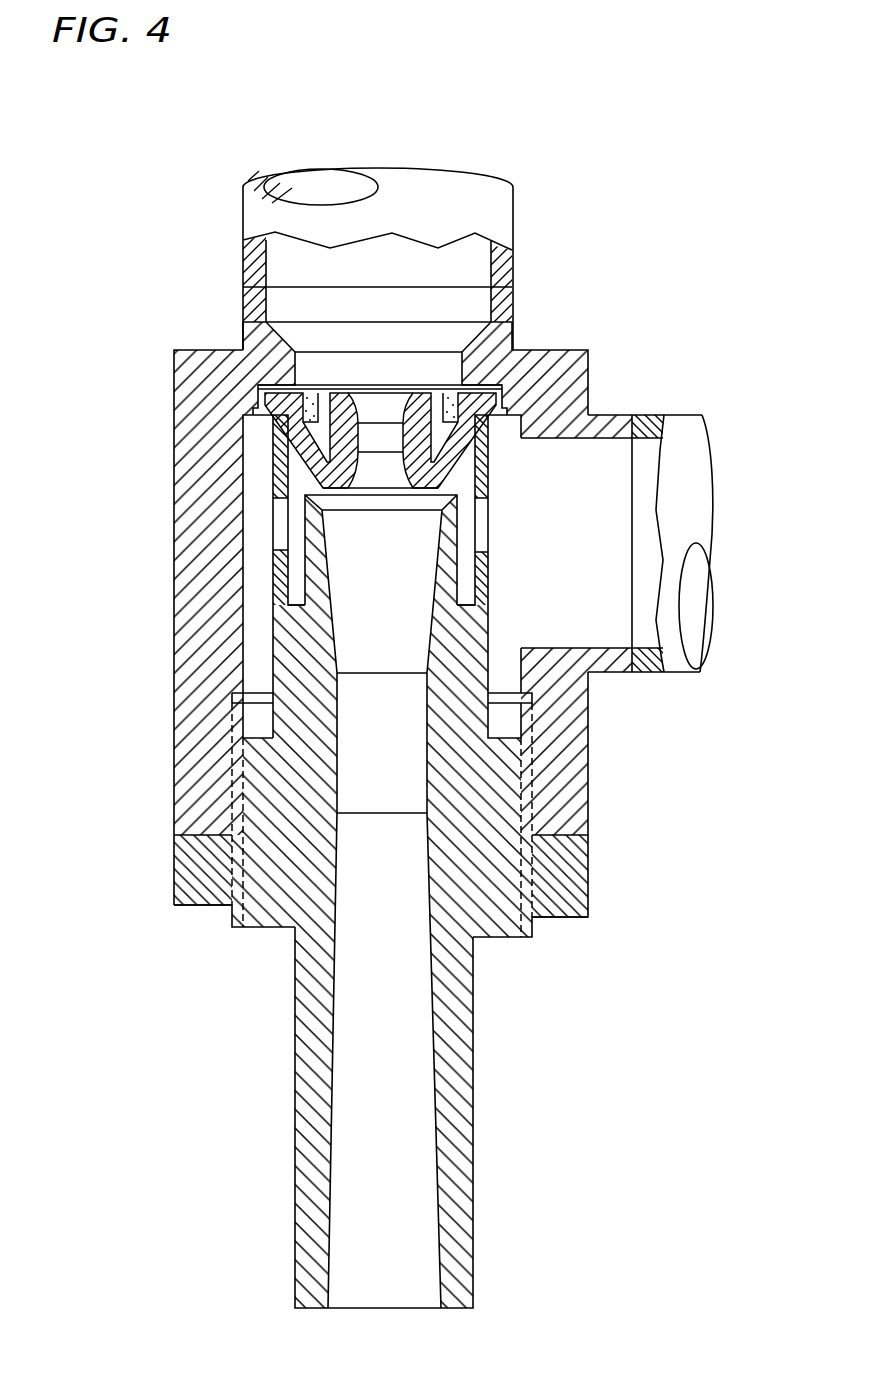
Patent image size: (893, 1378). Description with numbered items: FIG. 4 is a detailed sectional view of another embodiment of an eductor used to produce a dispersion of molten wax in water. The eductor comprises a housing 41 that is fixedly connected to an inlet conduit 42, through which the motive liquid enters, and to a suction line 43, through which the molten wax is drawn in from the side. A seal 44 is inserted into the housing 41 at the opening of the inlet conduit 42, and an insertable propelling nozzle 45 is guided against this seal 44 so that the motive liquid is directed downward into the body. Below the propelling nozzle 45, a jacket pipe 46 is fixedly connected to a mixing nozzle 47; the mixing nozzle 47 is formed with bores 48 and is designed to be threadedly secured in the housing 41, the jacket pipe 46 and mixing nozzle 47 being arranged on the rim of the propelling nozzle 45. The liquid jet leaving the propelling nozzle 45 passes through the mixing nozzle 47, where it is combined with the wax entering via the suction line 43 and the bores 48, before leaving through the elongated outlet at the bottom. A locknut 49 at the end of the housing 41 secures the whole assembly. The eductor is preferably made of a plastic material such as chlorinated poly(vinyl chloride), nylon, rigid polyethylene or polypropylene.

The housing 41 is at (196, 353).
The inlet conduit 42 is at (502, 224).
The suction line 43 is at (683, 422).
The seal 44 is at (502, 376).
The propelling nozzle 45 is at (490, 387).
The jacket pipe 46 is at (490, 587).
The mixing nozzle 47 is at (410, 778).
The bores 48 is at (283, 520).
The locknut 49 is at (573, 897).